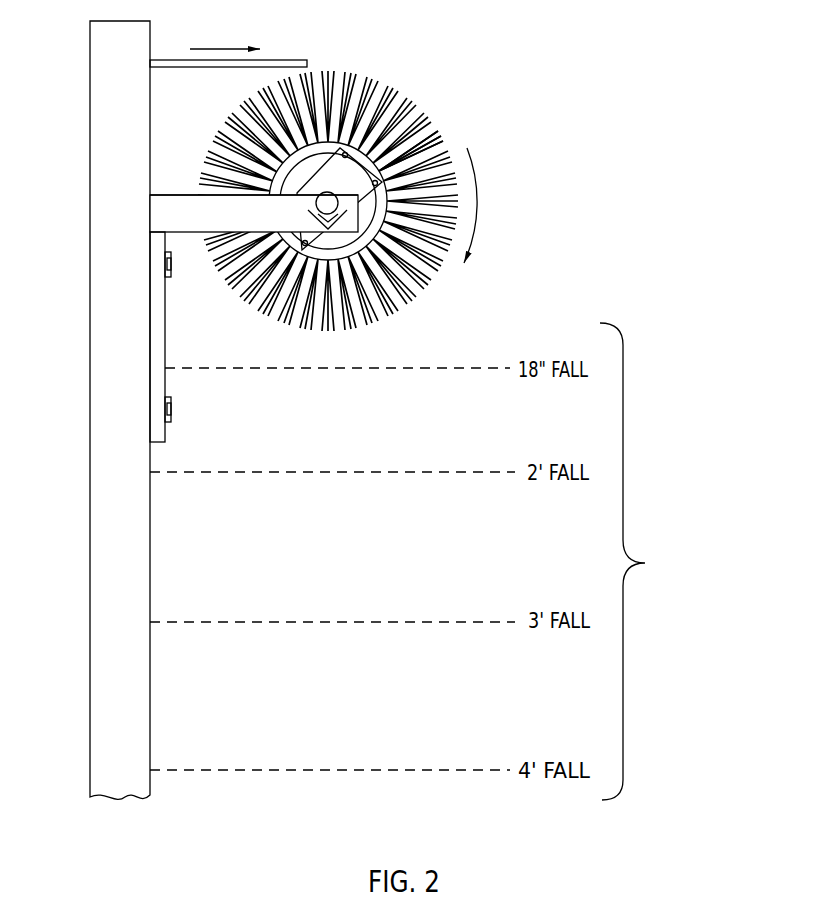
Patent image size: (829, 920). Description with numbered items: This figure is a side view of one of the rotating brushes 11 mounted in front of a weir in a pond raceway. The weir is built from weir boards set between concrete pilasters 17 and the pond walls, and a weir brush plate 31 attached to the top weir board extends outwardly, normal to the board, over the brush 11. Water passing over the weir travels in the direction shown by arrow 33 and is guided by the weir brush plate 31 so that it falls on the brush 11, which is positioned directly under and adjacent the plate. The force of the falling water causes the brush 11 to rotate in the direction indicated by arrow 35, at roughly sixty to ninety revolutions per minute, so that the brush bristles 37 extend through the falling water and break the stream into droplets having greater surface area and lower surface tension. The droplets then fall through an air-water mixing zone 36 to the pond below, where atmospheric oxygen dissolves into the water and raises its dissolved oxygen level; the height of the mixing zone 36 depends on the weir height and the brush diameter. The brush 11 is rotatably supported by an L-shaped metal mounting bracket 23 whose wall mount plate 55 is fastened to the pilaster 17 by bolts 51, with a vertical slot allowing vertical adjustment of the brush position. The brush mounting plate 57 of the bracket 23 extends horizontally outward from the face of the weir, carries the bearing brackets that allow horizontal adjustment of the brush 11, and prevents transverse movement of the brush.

The rotating brush 11 is at (418, 112).
The concrete pilaster 17 is at (112, 252).
The mounting bracket 23 is at (172, 216).
The weir brush plate 31 is at (285, 59).
The arrow 33 is at (221, 44).
The arrow 35 is at (480, 201).
The air-water mixing zone 36 is at (653, 555).
The brush bristles 37 is at (447, 133).
The bolts 51 is at (171, 268).
The wall mount plate 55 is at (166, 344).
The brush mounting plate 57 is at (180, 193).